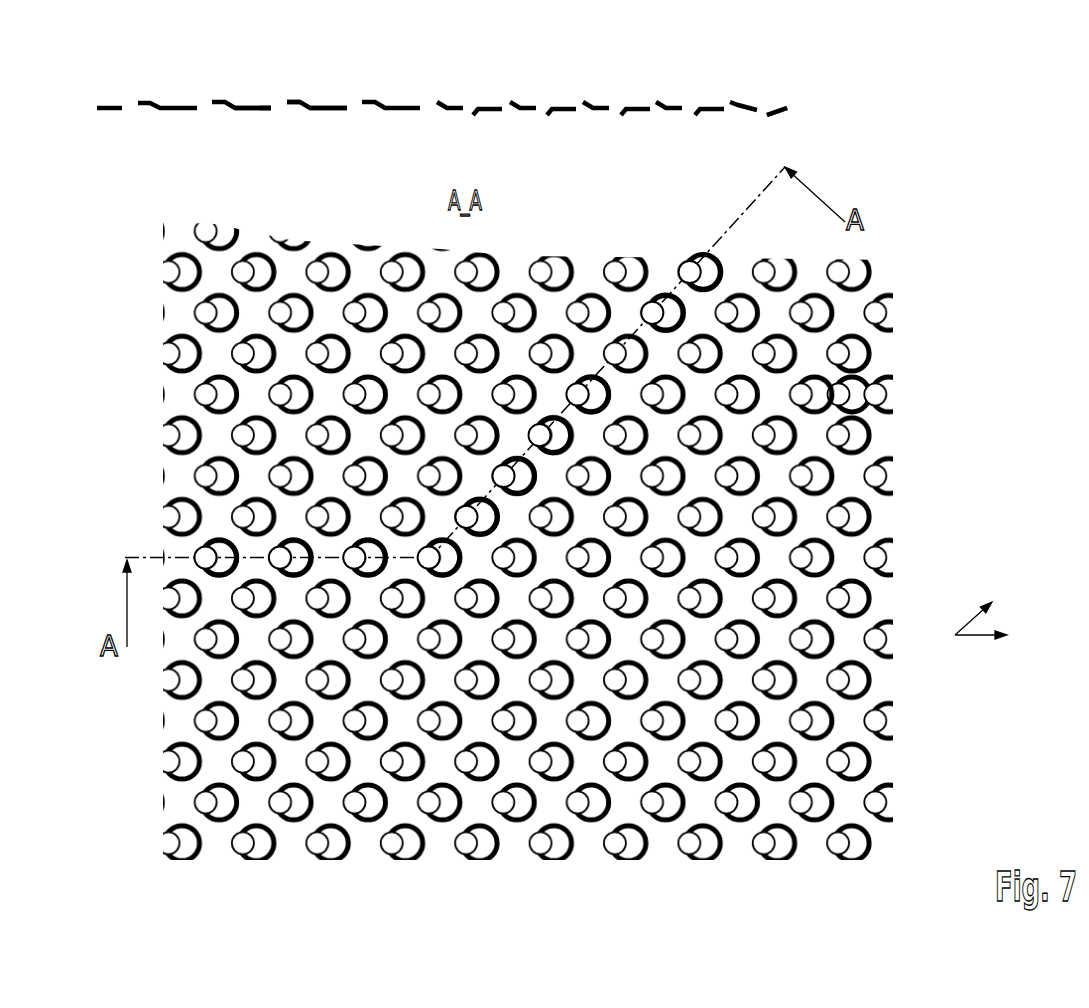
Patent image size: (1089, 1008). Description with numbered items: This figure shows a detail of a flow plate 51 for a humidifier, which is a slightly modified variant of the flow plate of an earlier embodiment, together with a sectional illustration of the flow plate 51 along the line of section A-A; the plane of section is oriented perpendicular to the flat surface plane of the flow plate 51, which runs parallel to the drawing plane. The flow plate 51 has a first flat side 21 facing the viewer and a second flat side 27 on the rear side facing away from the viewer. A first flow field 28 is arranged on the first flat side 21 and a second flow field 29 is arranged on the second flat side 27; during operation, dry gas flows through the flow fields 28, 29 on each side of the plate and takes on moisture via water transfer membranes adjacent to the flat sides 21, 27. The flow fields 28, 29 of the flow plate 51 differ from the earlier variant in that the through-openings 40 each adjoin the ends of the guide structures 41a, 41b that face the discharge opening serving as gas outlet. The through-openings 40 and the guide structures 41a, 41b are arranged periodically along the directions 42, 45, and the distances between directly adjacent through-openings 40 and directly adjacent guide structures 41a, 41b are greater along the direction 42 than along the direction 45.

The first flat side 21 is at (173, 105).
The second flat side 27 is at (250, 110).
The first flow field 28 is at (272, 92).
The second flow field 29 is at (339, 130).
The through-openings 40 is at (140, 128).
The guide structure 41a is at (297, 101).
The guide structure 41b is at (483, 117).
The flow plate 51 is at (802, 108).
The direction 45 is at (965, 625).
The direction 42 is at (967, 641).